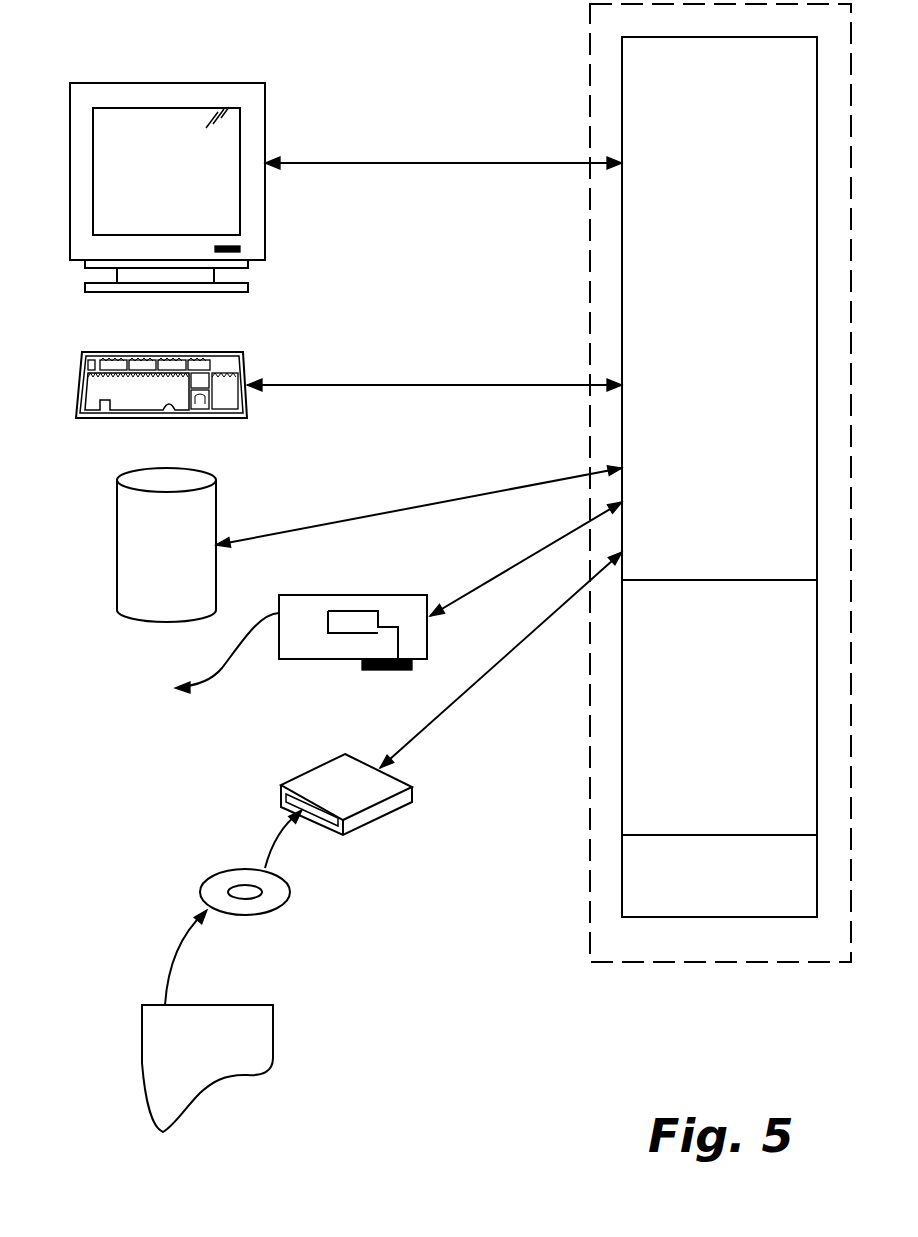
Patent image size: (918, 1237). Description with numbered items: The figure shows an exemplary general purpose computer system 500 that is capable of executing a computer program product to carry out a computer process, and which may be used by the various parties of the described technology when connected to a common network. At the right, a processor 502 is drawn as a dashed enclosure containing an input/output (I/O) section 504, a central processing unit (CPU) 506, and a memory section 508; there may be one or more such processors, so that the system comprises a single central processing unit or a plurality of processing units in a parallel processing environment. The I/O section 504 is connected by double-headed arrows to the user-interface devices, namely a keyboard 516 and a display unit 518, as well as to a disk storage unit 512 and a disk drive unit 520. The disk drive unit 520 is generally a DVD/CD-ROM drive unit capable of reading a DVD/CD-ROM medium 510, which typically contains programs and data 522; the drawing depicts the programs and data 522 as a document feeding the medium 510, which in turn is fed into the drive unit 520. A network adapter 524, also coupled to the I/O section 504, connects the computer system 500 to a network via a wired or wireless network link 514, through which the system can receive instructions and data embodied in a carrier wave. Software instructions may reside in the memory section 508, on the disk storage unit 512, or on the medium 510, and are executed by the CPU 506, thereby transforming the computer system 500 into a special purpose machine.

The general purpose computer system 500 is at (526, 1032).
The processor 502 is at (587, 68).
The input/output (I/O) section 504 is at (700, 331).
The central processing unit (CPU) 506 is at (700, 731).
The memory section 508 is at (700, 899).
The DVD/CD-ROM medium 510 is at (217, 875).
The disk storage unit 512 is at (117, 498).
The network link 514 is at (218, 673).
The keyboard 516 is at (120, 352).
The display unit 518 is at (133, 83).
The disk drive unit 520 is at (328, 787).
The programs and data 522 is at (273, 1027).
The network adapter 524 is at (328, 659).